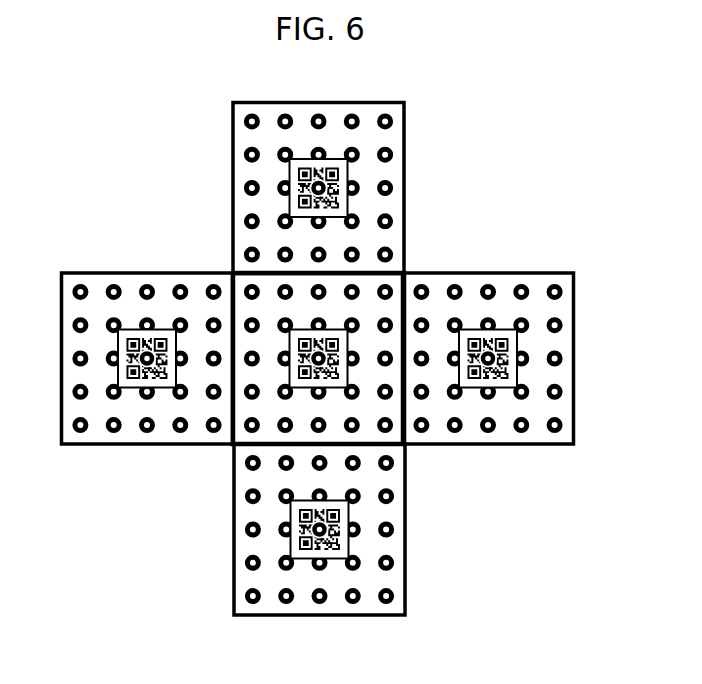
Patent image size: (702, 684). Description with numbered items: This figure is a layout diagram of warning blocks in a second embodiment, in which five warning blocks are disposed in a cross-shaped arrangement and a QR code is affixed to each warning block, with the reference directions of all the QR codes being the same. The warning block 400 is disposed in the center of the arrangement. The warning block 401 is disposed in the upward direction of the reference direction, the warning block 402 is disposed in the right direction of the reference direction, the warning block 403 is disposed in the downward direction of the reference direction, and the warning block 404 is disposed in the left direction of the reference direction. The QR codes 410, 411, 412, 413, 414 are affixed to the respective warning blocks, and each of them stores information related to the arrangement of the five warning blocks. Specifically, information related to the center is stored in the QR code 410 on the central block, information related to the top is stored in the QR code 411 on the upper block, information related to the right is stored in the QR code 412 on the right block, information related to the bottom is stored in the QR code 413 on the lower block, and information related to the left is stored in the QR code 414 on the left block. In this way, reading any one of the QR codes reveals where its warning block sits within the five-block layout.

The warning block 400 is at (258, 313).
The warning block 401 is at (380, 102).
The warning block 402 is at (502, 272).
The warning block 403 is at (341, 615).
The warning block 404 is at (97, 273).
The QR code 410 is at (333, 332).
The QR code 411 is at (353, 175).
The QR code 412 is at (522, 342).
The QR code 413 is at (348, 550).
The QR code 414 is at (135, 382).